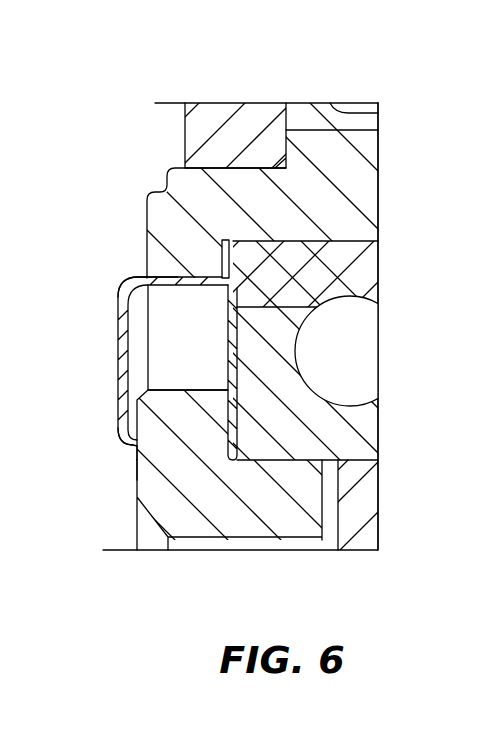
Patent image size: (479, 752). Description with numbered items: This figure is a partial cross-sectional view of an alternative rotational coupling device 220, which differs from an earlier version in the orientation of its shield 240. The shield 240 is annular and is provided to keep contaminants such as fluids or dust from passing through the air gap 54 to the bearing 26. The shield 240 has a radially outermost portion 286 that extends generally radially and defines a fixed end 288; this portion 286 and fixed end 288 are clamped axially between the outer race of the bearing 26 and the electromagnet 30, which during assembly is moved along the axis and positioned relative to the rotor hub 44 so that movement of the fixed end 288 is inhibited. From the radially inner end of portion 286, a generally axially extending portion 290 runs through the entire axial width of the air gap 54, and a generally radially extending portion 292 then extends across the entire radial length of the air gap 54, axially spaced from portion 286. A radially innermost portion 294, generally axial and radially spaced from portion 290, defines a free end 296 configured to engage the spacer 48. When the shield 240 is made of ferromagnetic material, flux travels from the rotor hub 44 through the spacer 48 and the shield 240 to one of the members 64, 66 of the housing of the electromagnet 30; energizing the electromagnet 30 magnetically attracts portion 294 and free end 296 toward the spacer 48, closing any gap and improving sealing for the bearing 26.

The rotational coupling device 220 is at (123, 105).
The electromagnet 30 is at (290, 88).
The member of housing 66 is at (232, 116).
The member of housing 64 is at (358, 181).
The fixed end 288 is at (232, 247).
The radially outermost portion 286 is at (240, 256).
The bearing 26 is at (365, 370).
The air gap 54 is at (180, 337).
The portion 292 is at (118, 360).
The portion 290 is at (175, 276).
The shield 240 is at (92, 430).
The radially innermost portion 294 is at (135, 457).
The free end 296 is at (136, 462).
The spacer 48 is at (280, 522).
The rotor hub 44 is at (360, 514).